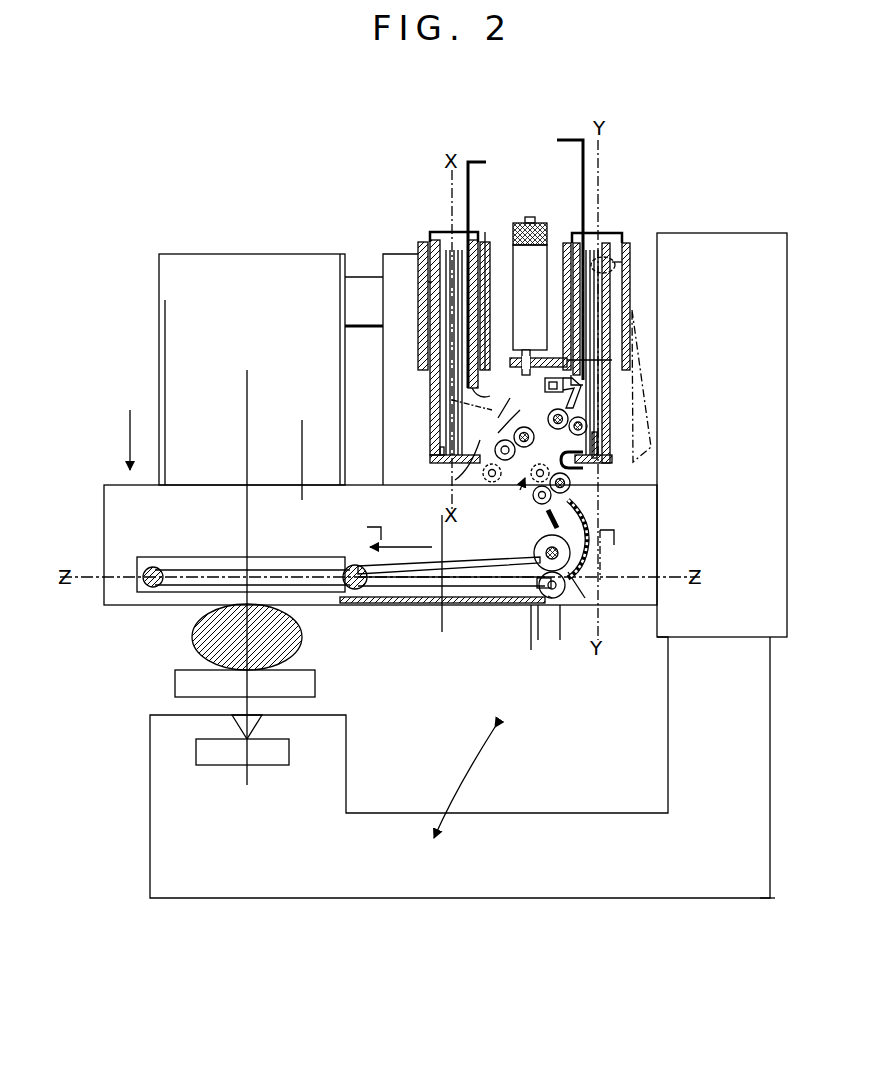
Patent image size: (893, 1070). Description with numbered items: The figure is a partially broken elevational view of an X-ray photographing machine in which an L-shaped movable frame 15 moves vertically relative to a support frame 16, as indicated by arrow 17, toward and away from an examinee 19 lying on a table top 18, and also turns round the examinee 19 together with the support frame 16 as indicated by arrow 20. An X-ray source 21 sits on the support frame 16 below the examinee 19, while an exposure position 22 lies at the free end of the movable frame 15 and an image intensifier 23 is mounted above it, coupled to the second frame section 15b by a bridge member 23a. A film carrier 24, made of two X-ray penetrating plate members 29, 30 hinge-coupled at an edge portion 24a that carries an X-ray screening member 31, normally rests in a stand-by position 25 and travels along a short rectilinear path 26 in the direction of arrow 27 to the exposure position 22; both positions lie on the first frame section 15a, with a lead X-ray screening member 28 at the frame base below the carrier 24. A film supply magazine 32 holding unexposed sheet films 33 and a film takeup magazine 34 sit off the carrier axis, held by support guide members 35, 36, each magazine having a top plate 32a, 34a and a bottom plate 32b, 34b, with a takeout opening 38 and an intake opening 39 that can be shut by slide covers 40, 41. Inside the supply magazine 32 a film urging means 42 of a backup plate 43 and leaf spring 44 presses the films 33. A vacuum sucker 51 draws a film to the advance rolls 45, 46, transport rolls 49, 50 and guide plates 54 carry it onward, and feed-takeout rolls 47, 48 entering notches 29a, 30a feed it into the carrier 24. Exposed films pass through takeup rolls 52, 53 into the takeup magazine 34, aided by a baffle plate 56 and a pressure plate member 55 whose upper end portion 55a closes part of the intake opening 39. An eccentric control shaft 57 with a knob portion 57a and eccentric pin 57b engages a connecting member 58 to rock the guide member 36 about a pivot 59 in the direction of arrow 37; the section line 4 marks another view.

The section line 4 is at (492, 553).
The movable frame 15 is at (396, 262).
The first frame section 15a is at (309, 460).
The second frame section 15b is at (380, 336).
The support frame 16 is at (675, 898).
The arrow 17 is at (130, 412).
The table top 18 is at (316, 686).
The examinee 19 is at (300, 636).
The arrow 20 is at (488, 752).
The X-ray source 21 is at (300, 740).
The exposure position 22 is at (250, 558).
The image intensifier 23 is at (276, 262).
The bridge member 23a is at (346, 318).
The film carrier 24 is at (203, 560).
The hinge-coupled portion 24a is at (392, 603).
The stand-by position 25 is at (445, 618).
The rectilinear path 26 is at (184, 562).
The arrow 27 is at (391, 552).
The X-ray screening member 28 is at (532, 641).
The plate member 29 is at (504, 587).
The notch 29a is at (538, 560).
The plate member 30 is at (530, 630).
The notch 30a is at (548, 605).
The X-ray screening member 31 is at (345, 572).
The film supply magazine 32 is at (425, 238).
The top plate 32a is at (458, 256).
The bottom plate 32b is at (432, 285).
The sheet film 33 is at (446, 388).
The film takeup magazine 34 is at (624, 234).
The top plate 34a is at (610, 232).
The bottom plate 34b is at (622, 262).
The support guide member 35 is at (485, 228).
The support guide member 36 is at (575, 242).
The arrow 37 is at (648, 478).
The film takeout opening 38 is at (474, 396).
The film intake opening 39 is at (583, 378).
The slide cover 40 is at (470, 156).
The slide cover 41 is at (568, 138).
The film urging means 42 is at (428, 466).
The backup plate 43 is at (432, 462).
The leaf spring 44 is at (438, 451).
The advance roll 45 is at (527, 427).
The advance roll 46 is at (480, 470).
The feed-takeout roll 47 is at (585, 586).
The feed-takeout roll 48 is at (556, 598).
The transport roll 49 is at (573, 510).
The transport roll 50 is at (530, 496).
The vacuum sucker 51 is at (466, 465).
The takeup roll 52 is at (592, 470).
The takeup roll 53 is at (552, 430).
The film feed guide plate 54 is at (586, 552).
The film pressure plate member 55 is at (588, 478).
The upper end portion 55a is at (630, 452).
The baffle plate 56 is at (580, 398).
The eccentric control shaft 57 is at (538, 268).
The knob portion 57a is at (518, 222).
The eccentric pin 57b is at (527, 350).
The connecting member 58 is at (612, 360).
The pivot 59 is at (613, 282).